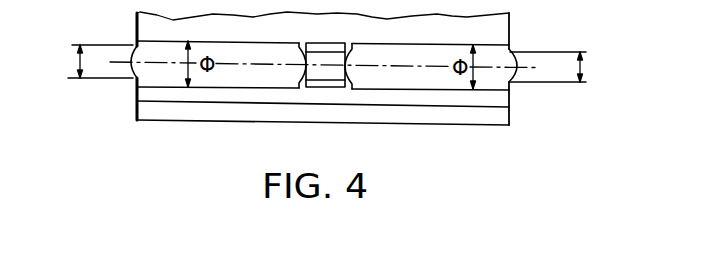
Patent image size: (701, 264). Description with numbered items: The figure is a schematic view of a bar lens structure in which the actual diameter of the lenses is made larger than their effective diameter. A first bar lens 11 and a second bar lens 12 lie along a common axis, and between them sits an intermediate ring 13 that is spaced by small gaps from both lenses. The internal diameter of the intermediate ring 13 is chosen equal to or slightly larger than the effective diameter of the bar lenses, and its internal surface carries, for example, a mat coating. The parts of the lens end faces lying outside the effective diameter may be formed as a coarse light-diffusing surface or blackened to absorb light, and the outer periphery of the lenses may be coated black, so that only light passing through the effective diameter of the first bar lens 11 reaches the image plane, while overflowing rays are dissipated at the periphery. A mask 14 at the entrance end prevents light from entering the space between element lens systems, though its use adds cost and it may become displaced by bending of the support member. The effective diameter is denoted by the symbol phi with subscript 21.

The first bar lens 11 is at (257, 83).
The second bar lens 12 is at (425, 83).
The intermediate ring 13 is at (325, 85).
The mask 14 is at (137, 100).
The small diameter passage 21 is at (603, 71).